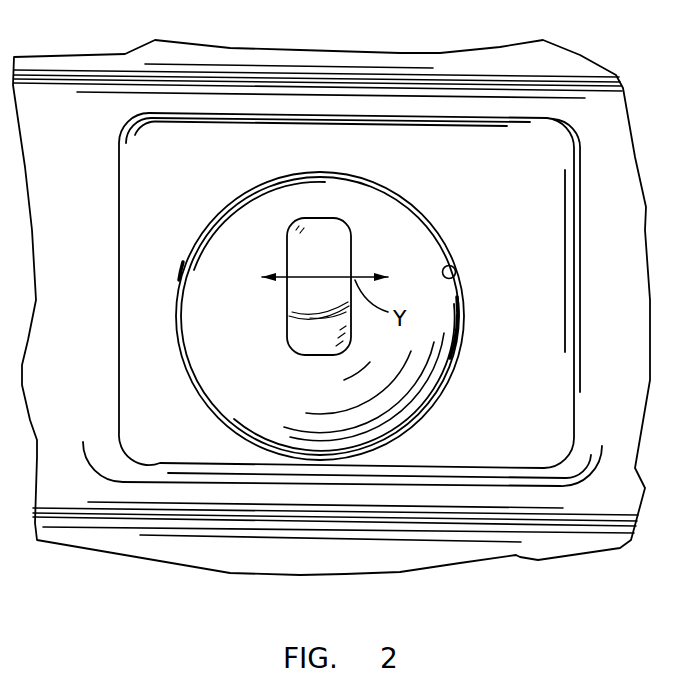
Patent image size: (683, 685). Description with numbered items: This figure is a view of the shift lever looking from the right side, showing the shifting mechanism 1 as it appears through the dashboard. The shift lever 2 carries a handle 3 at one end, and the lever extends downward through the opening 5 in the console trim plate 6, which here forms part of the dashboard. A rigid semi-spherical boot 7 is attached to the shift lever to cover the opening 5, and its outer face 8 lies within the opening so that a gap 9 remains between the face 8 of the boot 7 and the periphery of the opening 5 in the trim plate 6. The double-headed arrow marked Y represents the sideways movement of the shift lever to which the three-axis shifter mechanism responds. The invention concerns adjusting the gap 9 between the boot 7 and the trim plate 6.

The shifting mechanism 1 is at (429, 210).
The shift lever 2 is at (332, 233).
The handle 3 is at (308, 248).
The opening 5 is at (452, 267).
The console trim plate 6 is at (462, 145).
The rigid semi-spherical boot 7 is at (427, 317).
The face 8 is at (203, 372).
The gap 9 is at (177, 285).